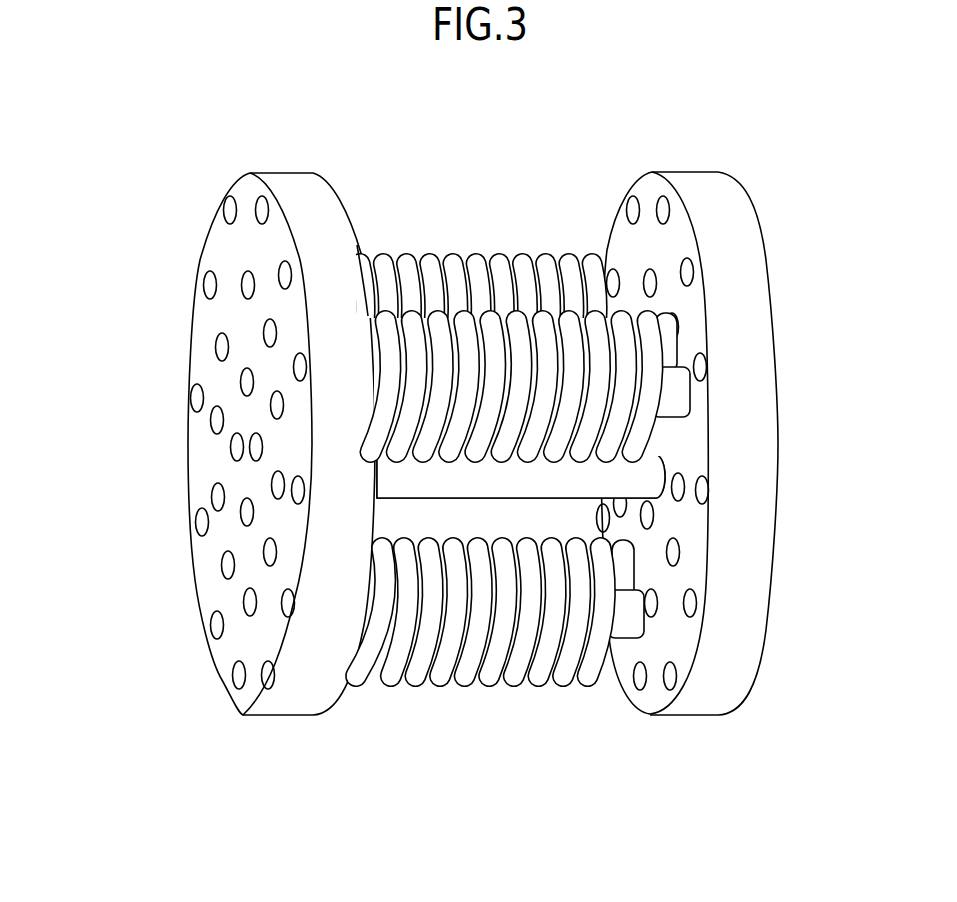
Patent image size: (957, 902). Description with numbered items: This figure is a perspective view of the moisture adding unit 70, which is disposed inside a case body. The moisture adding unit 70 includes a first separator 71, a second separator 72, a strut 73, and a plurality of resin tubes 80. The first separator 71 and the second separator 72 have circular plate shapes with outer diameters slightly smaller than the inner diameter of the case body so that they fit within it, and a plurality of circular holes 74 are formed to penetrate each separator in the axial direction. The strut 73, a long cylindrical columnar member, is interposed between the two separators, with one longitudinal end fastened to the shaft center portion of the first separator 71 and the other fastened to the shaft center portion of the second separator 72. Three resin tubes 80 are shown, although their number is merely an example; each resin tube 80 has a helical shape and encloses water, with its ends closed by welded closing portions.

The moisture adding unit 70 is at (462, 436).
The first separator 71 is at (281, 405).
The second separator 72 is at (689, 404).
The strut 73 is at (521, 607).
The circular holes 74 is at (462, 443).
The resin tubes 80 is at (517, 463).